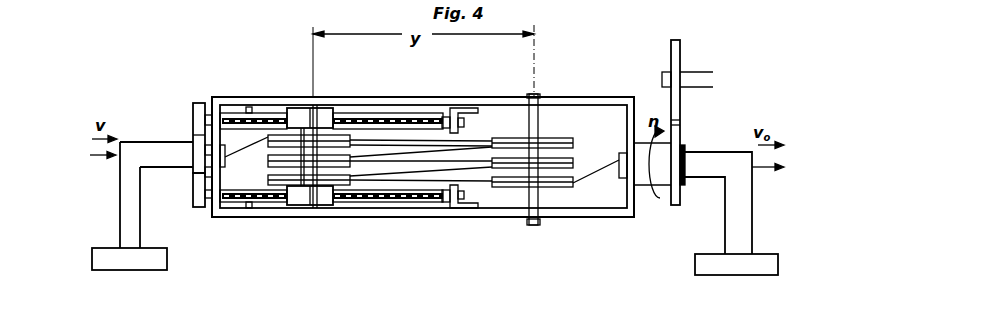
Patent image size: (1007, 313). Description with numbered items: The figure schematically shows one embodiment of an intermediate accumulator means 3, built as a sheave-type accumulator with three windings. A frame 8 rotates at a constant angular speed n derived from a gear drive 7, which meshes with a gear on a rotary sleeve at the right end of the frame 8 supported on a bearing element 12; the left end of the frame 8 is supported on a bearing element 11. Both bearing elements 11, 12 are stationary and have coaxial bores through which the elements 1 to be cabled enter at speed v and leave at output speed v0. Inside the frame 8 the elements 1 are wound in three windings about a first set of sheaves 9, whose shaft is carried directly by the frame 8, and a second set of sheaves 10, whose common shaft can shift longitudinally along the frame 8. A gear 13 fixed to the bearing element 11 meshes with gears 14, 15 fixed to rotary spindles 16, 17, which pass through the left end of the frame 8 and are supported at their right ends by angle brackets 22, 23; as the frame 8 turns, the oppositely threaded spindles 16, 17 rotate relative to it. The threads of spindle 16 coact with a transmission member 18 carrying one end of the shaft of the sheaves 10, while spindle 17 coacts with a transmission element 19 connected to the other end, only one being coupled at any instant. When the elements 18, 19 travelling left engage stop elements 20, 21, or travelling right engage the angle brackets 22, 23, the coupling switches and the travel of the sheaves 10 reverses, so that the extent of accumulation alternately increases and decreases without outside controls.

The elements to be cabled 1 is at (110, 158).
The accumulator means 3 is at (588, 206).
The gear drive 7 is at (678, 60).
The frame 8 is at (502, 217).
The sheaves 9 is at (558, 138).
The sheaves 10 is at (298, 206).
The bearing element 11 is at (156, 152).
The bearing element 12 is at (714, 162).
The gear 13 is at (197, 152).
The gear 14 is at (197, 180).
The gear 15 is at (198, 103).
The rotary spindle 16 is at (233, 203).
The rotary spindle 17 is at (277, 113).
The transmission member 18 is at (323, 206).
The transmission element 19 is at (330, 108).
The stop element 20 is at (249, 209).
The stop element 21 is at (249, 107).
The angle bracket 22 is at (460, 209).
The angle bracket 23 is at (467, 108).